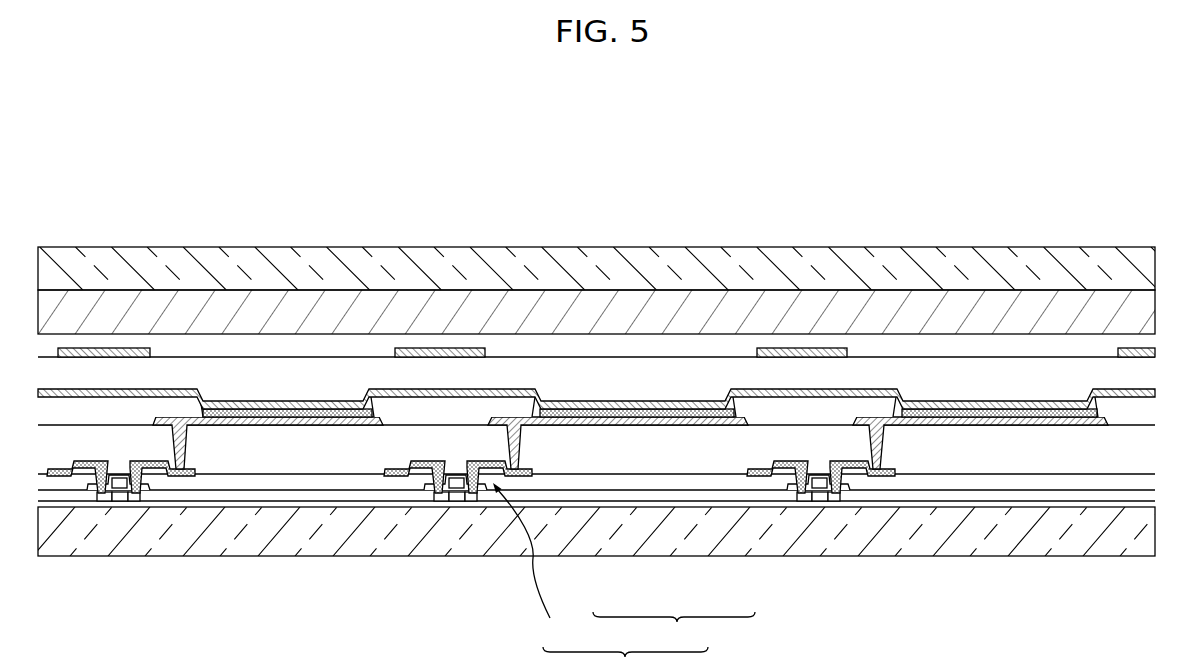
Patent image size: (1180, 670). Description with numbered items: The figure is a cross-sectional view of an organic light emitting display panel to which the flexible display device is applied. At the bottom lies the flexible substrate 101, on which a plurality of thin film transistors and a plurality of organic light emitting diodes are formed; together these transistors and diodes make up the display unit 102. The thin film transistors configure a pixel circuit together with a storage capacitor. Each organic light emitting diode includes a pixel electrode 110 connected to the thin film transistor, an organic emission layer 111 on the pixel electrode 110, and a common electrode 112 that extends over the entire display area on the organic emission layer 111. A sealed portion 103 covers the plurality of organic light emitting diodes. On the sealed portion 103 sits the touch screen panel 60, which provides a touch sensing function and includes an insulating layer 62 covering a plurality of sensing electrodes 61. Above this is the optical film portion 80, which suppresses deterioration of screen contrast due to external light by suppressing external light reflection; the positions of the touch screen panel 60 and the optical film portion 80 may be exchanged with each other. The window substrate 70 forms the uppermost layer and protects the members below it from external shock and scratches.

The touch screen panel 60 is at (205, 182).
The sensing electrodes 61 is at (110, 352).
The insulating layer 62 is at (190, 350).
The window substrate 70 is at (444, 270).
The optical film portion 80 is at (310, 318).
The flexible substrate 101 is at (295, 540).
The display unit 102 is at (596, 529).
The sealed portion 103 is at (688, 368).
The pixel electrode 110 is at (620, 425).
The organic emission layer 111 is at (672, 410).
The common electrode 112 is at (713, 403).